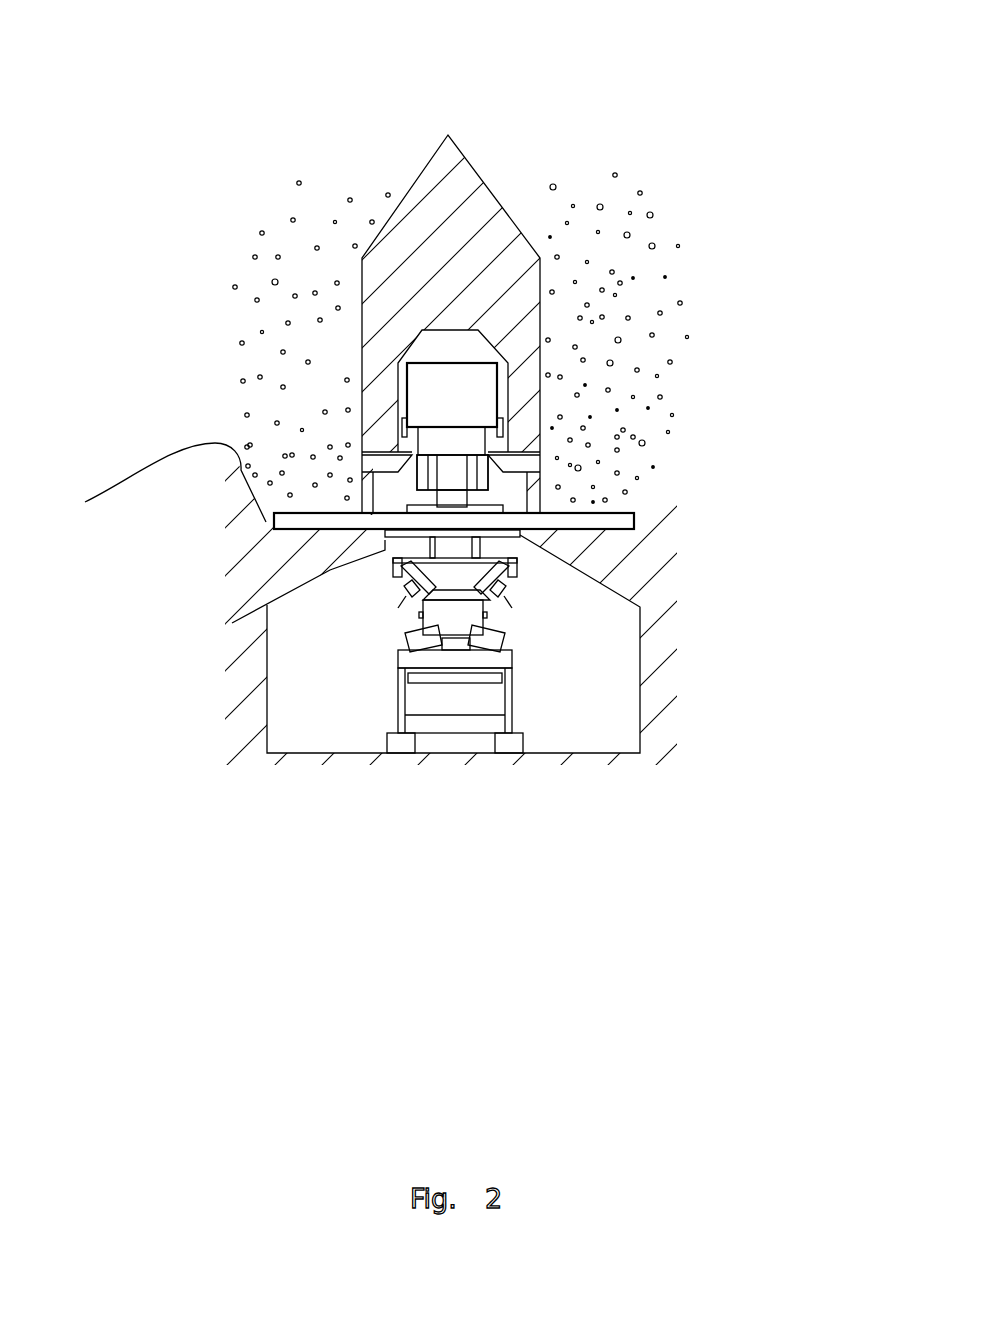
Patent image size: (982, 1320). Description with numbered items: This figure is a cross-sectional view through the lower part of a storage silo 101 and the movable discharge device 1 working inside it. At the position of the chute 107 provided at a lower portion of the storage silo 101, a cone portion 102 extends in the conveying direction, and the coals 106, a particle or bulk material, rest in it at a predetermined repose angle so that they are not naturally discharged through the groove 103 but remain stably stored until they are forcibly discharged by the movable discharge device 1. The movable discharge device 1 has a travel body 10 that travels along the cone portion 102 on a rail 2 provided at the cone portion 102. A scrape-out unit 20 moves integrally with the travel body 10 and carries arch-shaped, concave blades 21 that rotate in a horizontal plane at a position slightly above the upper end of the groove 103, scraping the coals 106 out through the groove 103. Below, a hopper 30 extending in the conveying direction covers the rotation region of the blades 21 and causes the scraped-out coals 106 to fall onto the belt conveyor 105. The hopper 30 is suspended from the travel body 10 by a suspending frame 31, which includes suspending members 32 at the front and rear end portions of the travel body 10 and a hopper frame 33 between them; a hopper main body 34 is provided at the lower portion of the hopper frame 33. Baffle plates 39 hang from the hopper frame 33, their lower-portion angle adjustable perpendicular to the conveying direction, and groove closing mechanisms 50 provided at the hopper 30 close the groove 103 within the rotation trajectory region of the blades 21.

The movable discharge device 1 is at (439, 362).
The rail 2 is at (402, 447).
The travel body 10 is at (448, 450).
The scrape-out unit 20 is at (420, 508).
The blades 21 is at (573, 513).
The hopper 30 is at (515, 587).
The suspending frame 31 is at (801, 577).
The suspending members 32 is at (505, 546).
The hopper frame 33 is at (516, 565).
The hopper main body 34 is at (506, 599).
The baffle plate 39 is at (493, 566).
The groove closing mechanism 50 is at (412, 534).
The storage silo 101 is at (310, 121).
The cone portion 102 is at (466, 176).
The groove 103 is at (522, 542).
The belt conveyor 105 is at (400, 633).
The coals 106 is at (618, 312).
The chute 107 is at (490, 605).